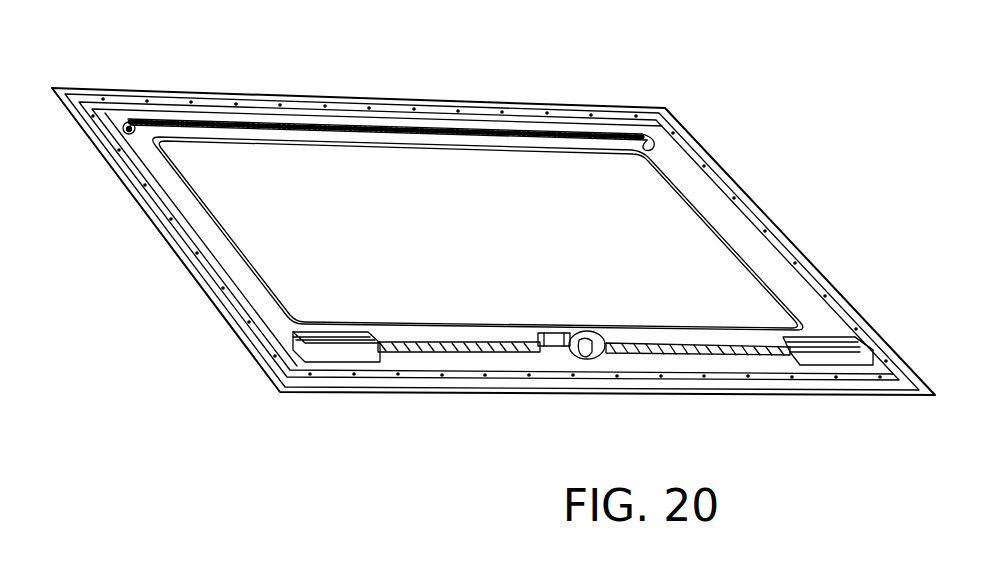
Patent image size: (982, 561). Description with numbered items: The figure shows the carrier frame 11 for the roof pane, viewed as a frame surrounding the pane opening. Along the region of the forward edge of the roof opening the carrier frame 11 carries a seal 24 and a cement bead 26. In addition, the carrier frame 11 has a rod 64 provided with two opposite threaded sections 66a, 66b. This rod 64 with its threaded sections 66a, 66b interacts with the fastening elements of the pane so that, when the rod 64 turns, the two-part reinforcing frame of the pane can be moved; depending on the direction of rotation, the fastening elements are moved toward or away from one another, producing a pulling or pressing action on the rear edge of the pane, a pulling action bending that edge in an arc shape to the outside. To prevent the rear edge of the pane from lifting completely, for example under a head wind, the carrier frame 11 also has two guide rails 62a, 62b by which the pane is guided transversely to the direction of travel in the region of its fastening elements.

The carrier frame 11 is at (197, 287).
The seal 24 is at (740, 196).
The cement bead 26 is at (410, 130).
The guide rail 62a is at (341, 358).
The guide rail 62b is at (840, 360).
The rod 64 is at (537, 346).
The threaded section 66a is at (445, 345).
The threaded section 66b is at (750, 350).